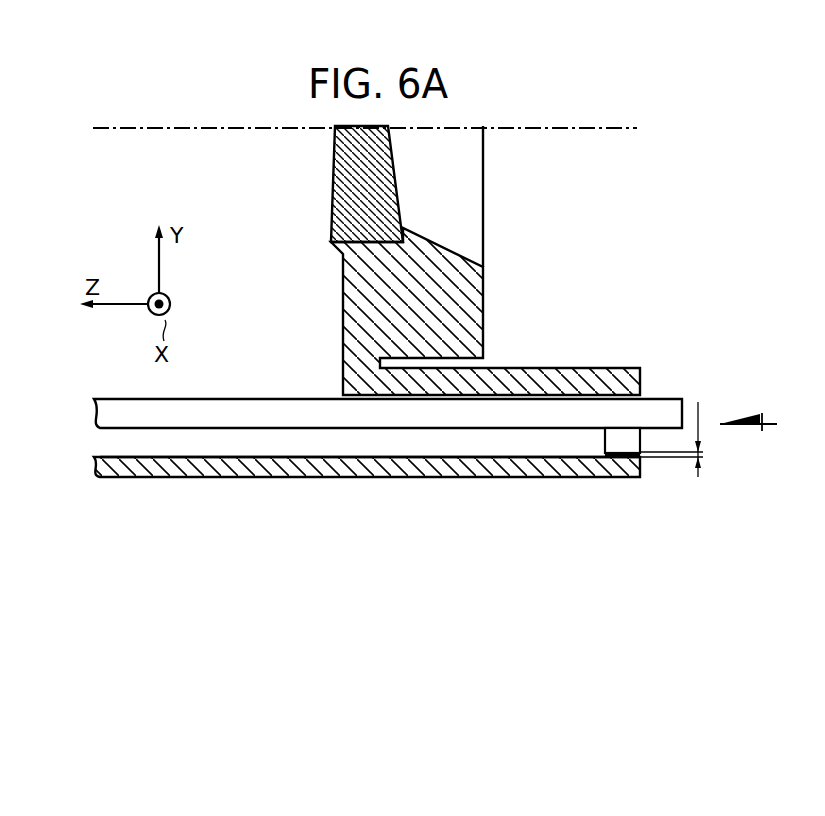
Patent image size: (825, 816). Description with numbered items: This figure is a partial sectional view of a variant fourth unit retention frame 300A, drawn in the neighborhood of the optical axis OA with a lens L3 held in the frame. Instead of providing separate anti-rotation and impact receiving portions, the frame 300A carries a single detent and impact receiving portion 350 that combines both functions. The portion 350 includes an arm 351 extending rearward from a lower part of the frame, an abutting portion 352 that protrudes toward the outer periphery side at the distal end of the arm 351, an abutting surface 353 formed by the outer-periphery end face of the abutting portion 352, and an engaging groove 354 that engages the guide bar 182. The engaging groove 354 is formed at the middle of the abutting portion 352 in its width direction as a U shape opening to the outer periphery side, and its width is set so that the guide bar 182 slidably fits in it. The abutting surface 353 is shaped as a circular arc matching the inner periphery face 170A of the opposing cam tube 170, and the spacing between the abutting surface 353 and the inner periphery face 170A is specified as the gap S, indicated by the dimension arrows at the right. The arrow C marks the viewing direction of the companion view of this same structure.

The optical axis OA is at (142, 132).
The lens L3 is at (332, 207).
The fourth unit retention frame 300A is at (485, 288).
The arm 351 is at (515, 394).
The guide bar 182 is at (300, 399).
The cam tube 170 is at (373, 478).
The inner periphery face 170A is at (433, 452).
The engaging groove 354 is at (625, 470).
The abutting surface 353 is at (625, 442).
The abutting portion 352 is at (642, 438).
The detent and impact receiving portion 350 is at (708, 535).
The gap S is at (710, 439).
The arrow C is at (750, 408).